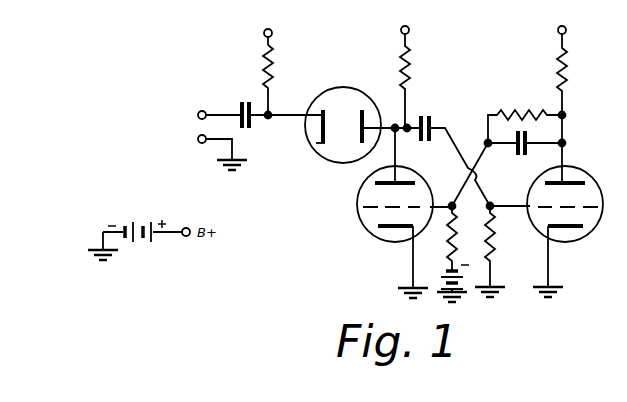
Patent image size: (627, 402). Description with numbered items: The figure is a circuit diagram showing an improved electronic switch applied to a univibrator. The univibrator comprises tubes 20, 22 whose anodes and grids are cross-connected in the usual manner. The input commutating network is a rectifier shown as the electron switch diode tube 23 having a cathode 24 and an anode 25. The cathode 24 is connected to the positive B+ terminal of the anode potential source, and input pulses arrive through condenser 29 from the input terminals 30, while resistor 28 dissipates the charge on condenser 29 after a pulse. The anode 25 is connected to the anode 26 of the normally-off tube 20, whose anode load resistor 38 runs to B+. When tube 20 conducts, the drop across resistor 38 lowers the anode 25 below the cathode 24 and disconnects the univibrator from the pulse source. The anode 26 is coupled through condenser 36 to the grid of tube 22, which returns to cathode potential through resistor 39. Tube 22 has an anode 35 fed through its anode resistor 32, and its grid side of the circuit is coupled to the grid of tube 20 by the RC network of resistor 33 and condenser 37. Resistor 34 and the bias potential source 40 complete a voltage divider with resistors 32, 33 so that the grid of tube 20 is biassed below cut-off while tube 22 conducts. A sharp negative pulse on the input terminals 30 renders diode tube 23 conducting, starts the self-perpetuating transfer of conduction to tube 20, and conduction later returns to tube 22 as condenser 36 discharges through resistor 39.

The normally-off tube 20 is at (360, 232).
The tube 22 is at (571, 242).
The electron switch diode tube 23 is at (305, 134).
The cathode 24 is at (323, 108).
The anode 25 is at (363, 108).
The anode 26 is at (373, 184).
The resistor 28 is at (260, 70).
The condenser 29 is at (236, 110).
The input terminals 30 is at (200, 142).
The anode resistor 32 is at (553, 70).
The resistor 33 is at (527, 110).
The resistor 34 is at (448, 254).
The anode 35 is at (578, 182).
The condenser 36 is at (424, 116).
The condenser 37 is at (528, 157).
The anode load resistor 38 is at (412, 76).
The resistor 39 is at (497, 253).
The bias potential source 40 is at (440, 279).